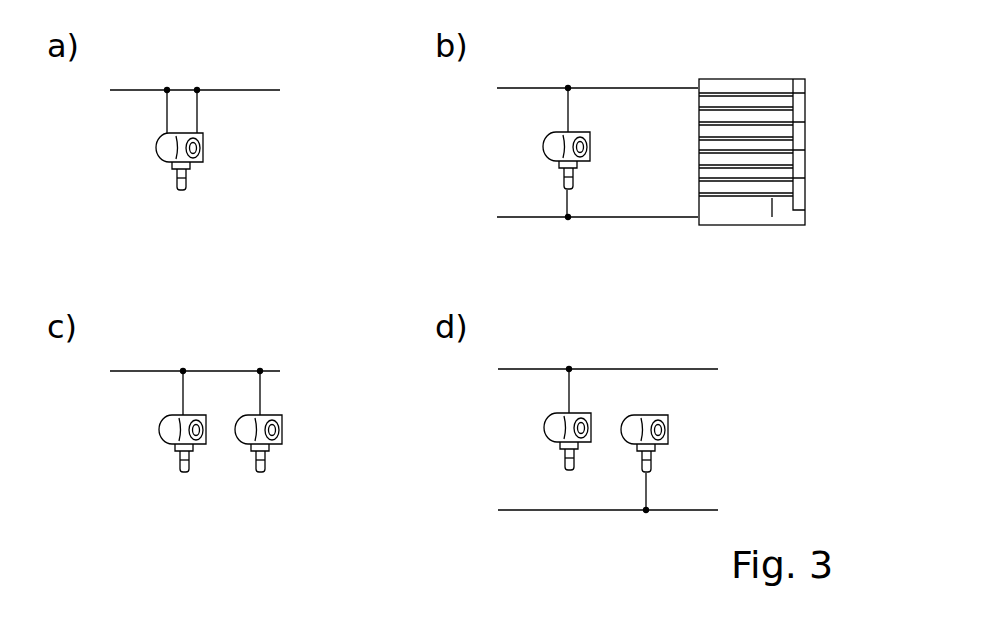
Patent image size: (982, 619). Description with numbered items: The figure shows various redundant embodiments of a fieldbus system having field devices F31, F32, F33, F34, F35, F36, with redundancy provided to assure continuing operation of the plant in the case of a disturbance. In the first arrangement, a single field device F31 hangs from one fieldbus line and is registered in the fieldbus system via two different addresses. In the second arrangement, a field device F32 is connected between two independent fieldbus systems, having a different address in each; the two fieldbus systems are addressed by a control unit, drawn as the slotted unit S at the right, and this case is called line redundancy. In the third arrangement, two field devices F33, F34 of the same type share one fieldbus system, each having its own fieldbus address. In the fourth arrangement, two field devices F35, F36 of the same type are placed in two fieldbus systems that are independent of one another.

The field device F31 is at (171, 170).
The field device F32 is at (559, 168).
The field device F33 is at (172, 452).
The field device F34 is at (249, 452).
The field device F35 is at (553, 450).
The field device F36 is at (630, 452).
The heat exchanger stack S is at (800, 167).